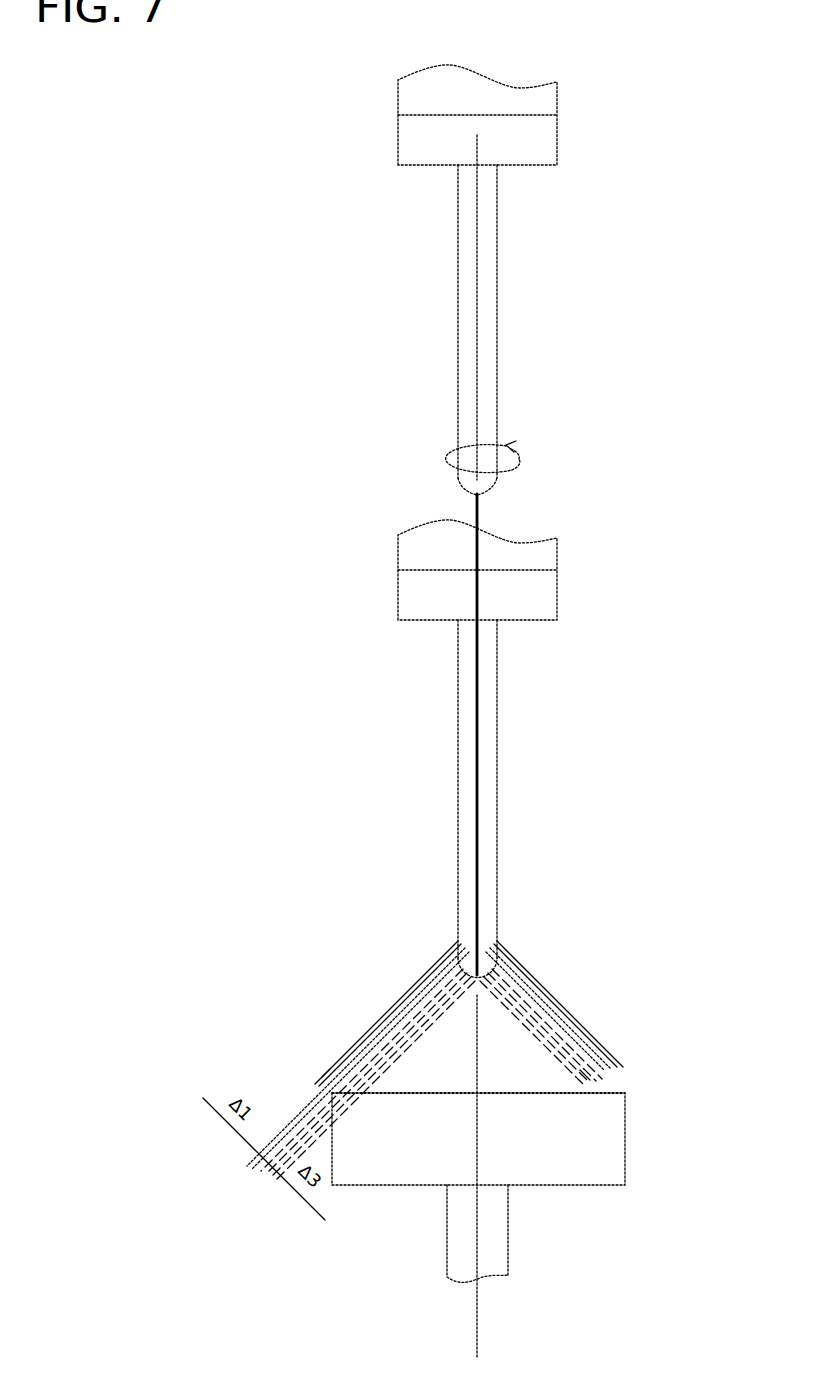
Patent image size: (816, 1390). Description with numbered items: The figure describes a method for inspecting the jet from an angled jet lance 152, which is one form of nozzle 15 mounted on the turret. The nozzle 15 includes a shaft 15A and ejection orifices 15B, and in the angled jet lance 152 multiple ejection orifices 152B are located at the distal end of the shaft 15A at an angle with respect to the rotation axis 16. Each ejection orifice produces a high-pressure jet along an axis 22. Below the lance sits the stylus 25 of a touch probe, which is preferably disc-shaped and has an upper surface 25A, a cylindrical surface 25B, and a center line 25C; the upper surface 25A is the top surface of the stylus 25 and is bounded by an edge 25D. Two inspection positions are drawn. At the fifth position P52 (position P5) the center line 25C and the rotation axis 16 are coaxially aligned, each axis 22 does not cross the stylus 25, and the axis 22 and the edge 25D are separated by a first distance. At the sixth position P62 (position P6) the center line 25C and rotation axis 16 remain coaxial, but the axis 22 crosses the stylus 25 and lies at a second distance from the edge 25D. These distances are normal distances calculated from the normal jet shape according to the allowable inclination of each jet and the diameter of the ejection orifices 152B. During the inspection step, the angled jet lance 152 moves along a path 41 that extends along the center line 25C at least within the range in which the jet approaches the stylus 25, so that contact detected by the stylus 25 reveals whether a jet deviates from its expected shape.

The rotation axis 16 is at (479, 405).
The path 41 is at (480, 513).
The nozzle 15 is at (417, 789).
The angled jet lance 152 is at (417, 789).
The shaft 15A is at (458, 834).
The ejection orifice 15B is at (393, 955).
The ejection orifice 152B is at (458, 941).
The fifth position P5 is at (448, 1049).
The position (fifth position) P52 is at (500, 950).
The sixth position P6 is at (455, 1069).
The position (sixth position) P62 is at (492, 972).
The axis 22 is at (328, 1068).
The stylus 25 is at (510, 1176).
The upper surface 25A is at (600, 1057).
The cylindrical surface 25B is at (627, 1143).
The center line 25C is at (480, 1320).
The edge 25D is at (626, 1094).